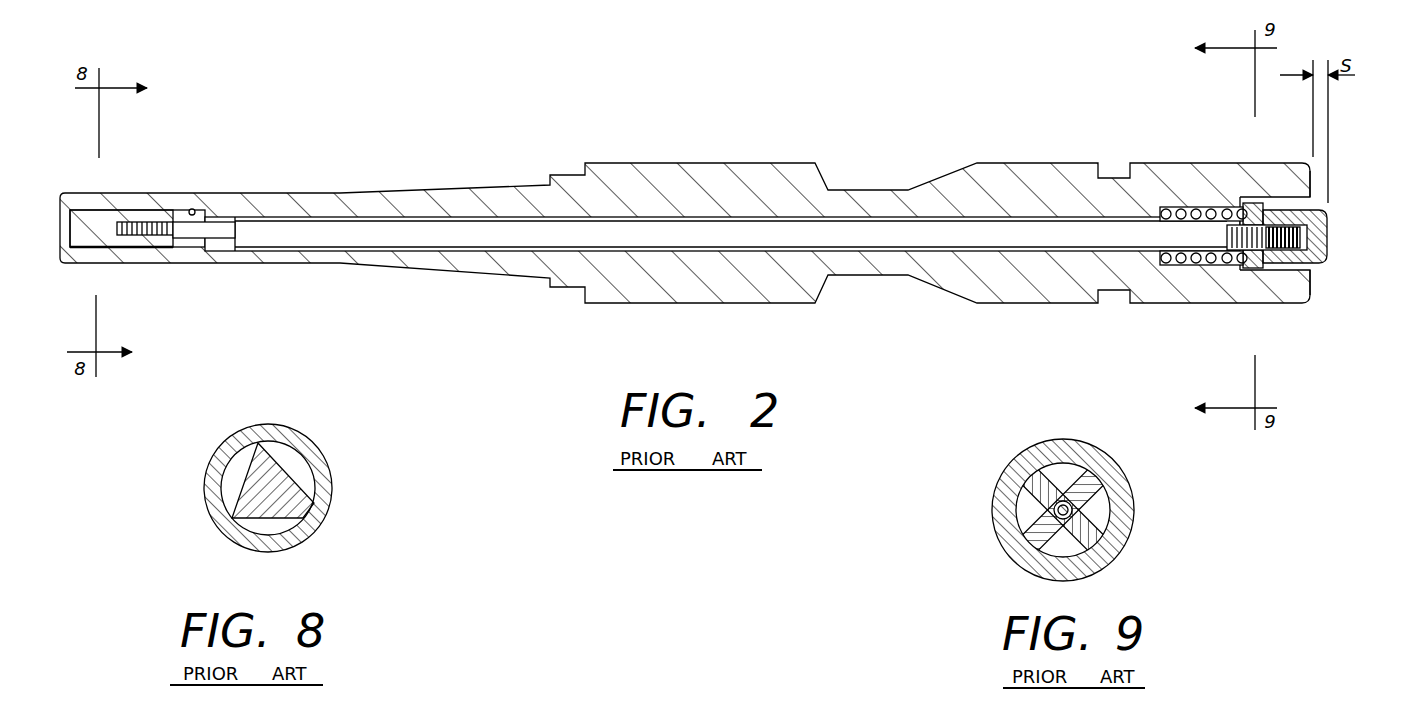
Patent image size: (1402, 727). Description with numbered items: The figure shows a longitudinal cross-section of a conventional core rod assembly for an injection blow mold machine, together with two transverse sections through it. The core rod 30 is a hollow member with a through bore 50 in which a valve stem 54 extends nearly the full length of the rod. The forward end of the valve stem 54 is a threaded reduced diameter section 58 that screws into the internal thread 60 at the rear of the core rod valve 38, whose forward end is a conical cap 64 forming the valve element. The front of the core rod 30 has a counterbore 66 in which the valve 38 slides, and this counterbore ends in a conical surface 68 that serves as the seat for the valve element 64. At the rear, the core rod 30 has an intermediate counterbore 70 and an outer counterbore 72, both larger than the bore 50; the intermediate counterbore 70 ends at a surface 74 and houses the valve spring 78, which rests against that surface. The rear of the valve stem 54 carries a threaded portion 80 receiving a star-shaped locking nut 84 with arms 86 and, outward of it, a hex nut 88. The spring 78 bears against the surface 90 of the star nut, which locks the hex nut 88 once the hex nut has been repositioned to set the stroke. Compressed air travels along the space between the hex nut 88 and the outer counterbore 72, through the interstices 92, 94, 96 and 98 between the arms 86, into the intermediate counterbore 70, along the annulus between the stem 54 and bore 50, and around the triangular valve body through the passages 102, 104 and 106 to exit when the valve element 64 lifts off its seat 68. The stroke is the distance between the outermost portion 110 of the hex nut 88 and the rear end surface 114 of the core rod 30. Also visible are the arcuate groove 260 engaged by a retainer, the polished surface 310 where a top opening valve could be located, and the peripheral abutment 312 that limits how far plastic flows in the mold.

In FIG. 2, the core rod 30 is at (665, 178).
In FIG. 8, the core rod 30 is at (270, 428).
In FIG. 9, the core rod 30 is at (1003, 483).
In FIG. 2, the core rod valve 38 is at (115, 205).
In FIG. 8, the core rod valve 38 is at (275, 465).
In FIG. 2, the through bore 50 is at (857, 228).
In FIG. 2, the valve stem 54 is at (455, 228).
In FIG. 9, the valve stem 54 is at (1075, 511).
In FIG. 2, the reduced diameter section 58 is at (218, 225).
In FIG. 2, the internal thread 60 is at (150, 236).
In FIG. 2, the conical cap 64 is at (72, 213).
In FIG. 2, the counterbore 66 is at (193, 209).
In FIG. 2, the conical surface 68 is at (75, 247).
In FIG. 2, the intermediate counterbore 70 is at (1178, 212).
In FIG. 2, the outer counterbore 72 is at (1282, 196).
In FIG. 9, the outer counterbore 72 is at (1075, 551).
In FIG. 2, the surface 74 is at (1170, 262).
In FIG. 2, the valve spring 78 is at (1193, 214).
In FIG. 2, the threaded portion 80 is at (1257, 266).
In FIG. 9, the threaded portion 80 is at (1095, 546).
In FIG. 2, the locking nut 84 is at (1255, 210).
In FIG. 9, the locking nut 84 is at (1040, 531).
In FIG. 9, the arms 86 is at (1020, 468).
In FIG. 2, the hex nut 88 is at (1312, 226).
In FIG. 2, the surface 90 is at (1243, 262).
In FIG. 9, the interstice 92 is at (1025, 505).
In FIG. 9, the interstice 94 is at (1055, 546).
In FIG. 9, the interstice 96 is at (1107, 486).
In FIG. 9, the interstice 98 is at (1063, 472).
In FIG. 8, the passage 102 is at (232, 466).
In FIG. 8, the passage 104 is at (300, 473).
In FIG. 8, the passage 106 is at (262, 528).
In FIG. 2, the outermost portion 110 is at (1330, 243).
In FIG. 2, the rear end surface 114 is at (1315, 270).
In FIG. 2, the arcuate groove 260 is at (1105, 178).
In FIG. 2, the polished surface 310 is at (325, 192).
In FIG. 2, the peripheral abutment 312 is at (550, 183).